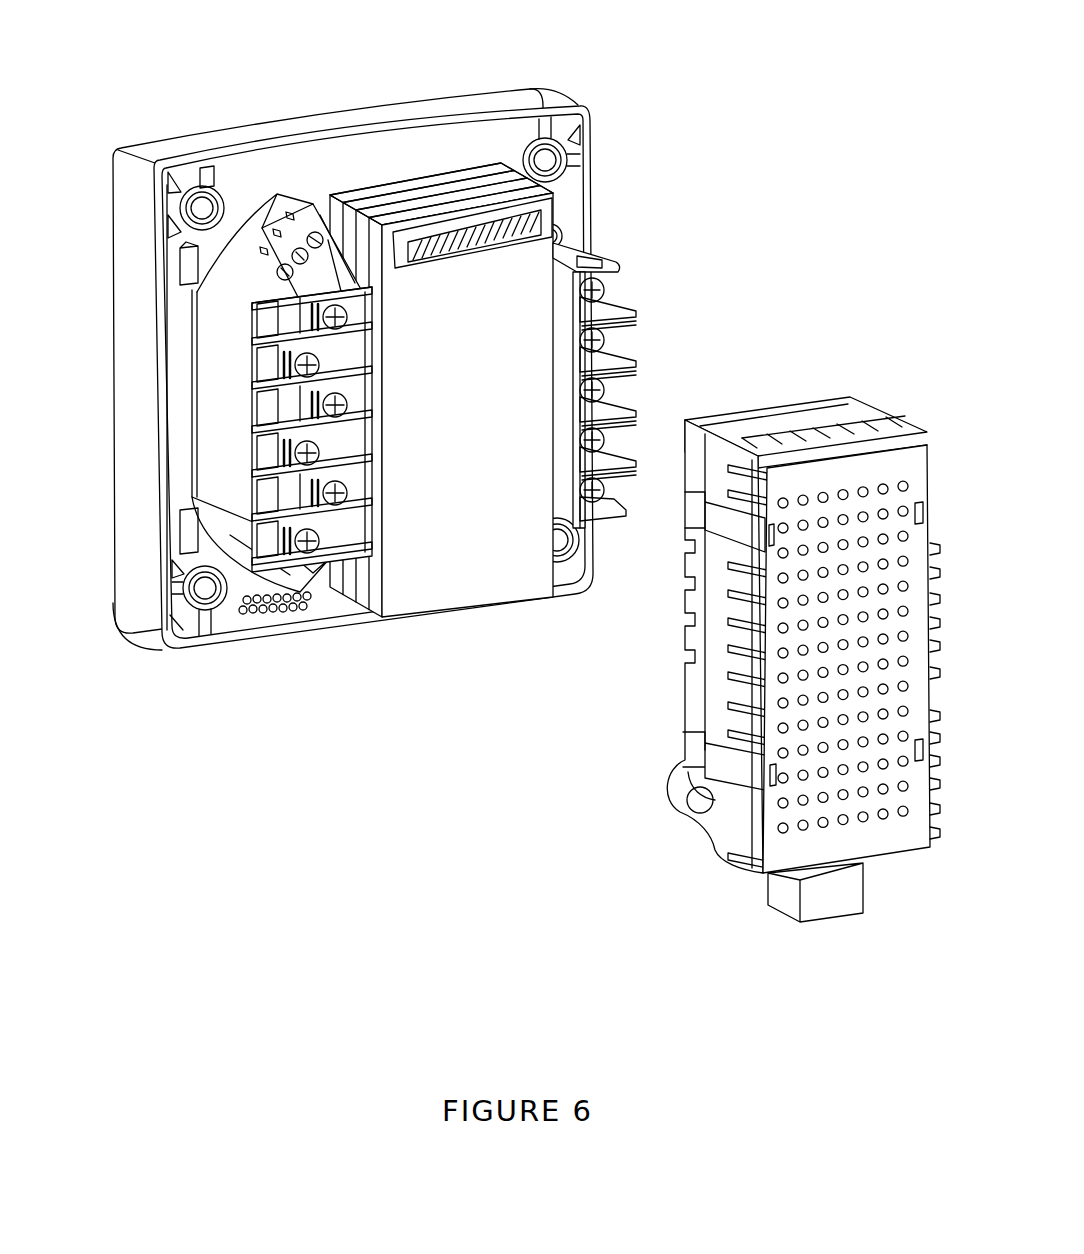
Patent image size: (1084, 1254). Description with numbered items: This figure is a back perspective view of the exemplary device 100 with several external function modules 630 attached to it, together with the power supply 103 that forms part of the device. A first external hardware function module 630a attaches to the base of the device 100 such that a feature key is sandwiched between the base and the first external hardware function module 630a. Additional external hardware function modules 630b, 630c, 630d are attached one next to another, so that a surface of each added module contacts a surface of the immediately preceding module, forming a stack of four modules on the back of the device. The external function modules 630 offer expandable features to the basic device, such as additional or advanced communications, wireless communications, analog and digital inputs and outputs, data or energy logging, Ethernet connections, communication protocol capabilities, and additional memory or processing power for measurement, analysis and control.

The device 100 is at (747, 1023).
The power supply 103 is at (711, 889).
The external function modules 630 is at (414, 366).
The first external hardware function module 630a is at (467, 173).
The external hardware function module 630b is at (450, 192).
The external hardware function module 630c is at (407, 208).
The external hardware function module 630d is at (382, 222).